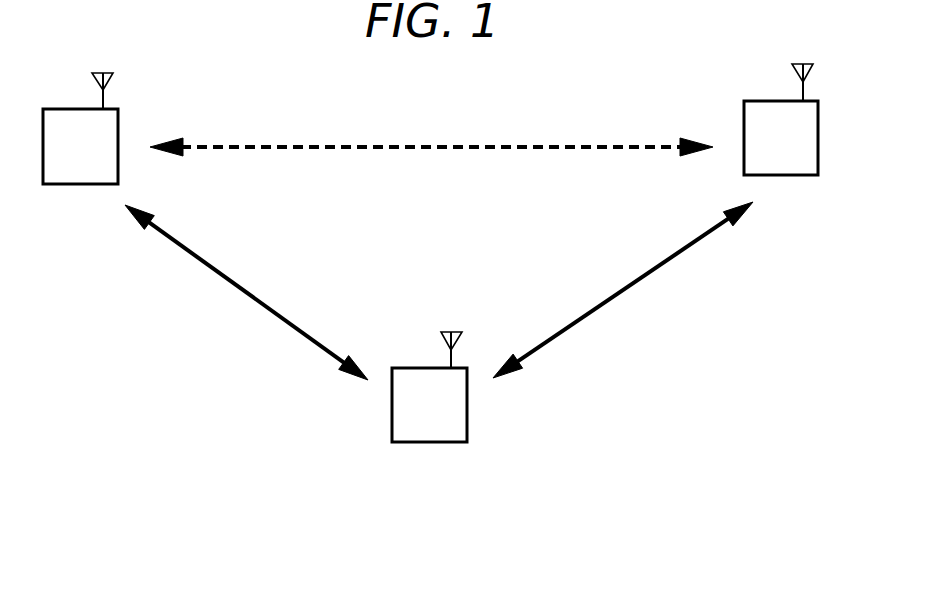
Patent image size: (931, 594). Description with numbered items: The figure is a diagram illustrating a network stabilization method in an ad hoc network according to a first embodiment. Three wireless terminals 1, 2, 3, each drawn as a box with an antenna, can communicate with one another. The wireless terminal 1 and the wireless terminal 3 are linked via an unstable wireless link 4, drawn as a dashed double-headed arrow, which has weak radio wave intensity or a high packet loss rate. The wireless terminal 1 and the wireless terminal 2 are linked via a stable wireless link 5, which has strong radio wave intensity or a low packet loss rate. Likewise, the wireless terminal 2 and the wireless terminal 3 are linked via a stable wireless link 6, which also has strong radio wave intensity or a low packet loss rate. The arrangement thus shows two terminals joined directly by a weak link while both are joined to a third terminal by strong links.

The wireless terminal 1 is at (118, 120).
The wireless terminal 2 is at (467, 380).
The wireless terminal 3 is at (818, 112).
The unstable wireless link 4 is at (450, 145).
The stable wireless link 5 is at (244, 294).
The stable wireless link 6 is at (642, 279).